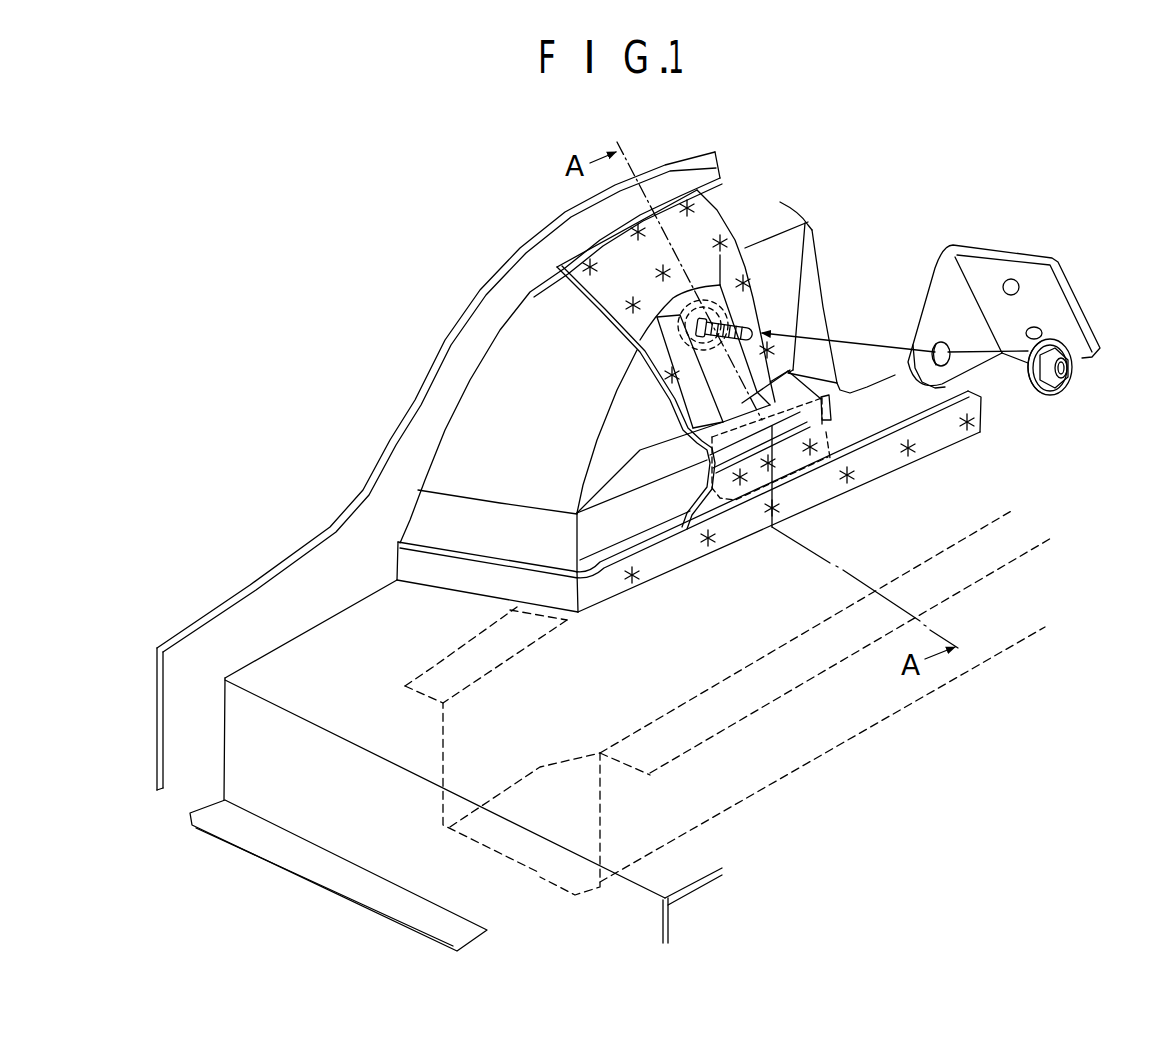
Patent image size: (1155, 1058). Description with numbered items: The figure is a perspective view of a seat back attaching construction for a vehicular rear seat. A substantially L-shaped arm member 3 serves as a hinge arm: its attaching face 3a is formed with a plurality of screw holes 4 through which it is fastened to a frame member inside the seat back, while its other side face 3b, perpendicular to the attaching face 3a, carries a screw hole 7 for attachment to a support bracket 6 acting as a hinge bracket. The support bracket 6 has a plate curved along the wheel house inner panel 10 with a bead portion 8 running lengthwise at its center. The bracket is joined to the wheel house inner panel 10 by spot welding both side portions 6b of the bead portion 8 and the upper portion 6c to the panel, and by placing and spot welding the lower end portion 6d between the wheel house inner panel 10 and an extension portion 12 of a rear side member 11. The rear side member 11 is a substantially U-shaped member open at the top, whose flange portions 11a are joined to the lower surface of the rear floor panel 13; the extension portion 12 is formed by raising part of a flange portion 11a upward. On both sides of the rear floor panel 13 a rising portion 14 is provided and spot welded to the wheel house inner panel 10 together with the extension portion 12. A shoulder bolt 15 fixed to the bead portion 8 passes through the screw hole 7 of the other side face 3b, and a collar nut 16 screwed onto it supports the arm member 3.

The arm member 3 is at (988, 243).
The attaching face 3a is at (1066, 286).
The other side face 3b is at (918, 332).
The screw hole 4 is at (1042, 336).
The support bracket 6 is at (728, 223).
The side portion 6b is at (725, 291).
The upper portion 6c is at (703, 213).
The lower end portion 6d is at (700, 458).
The screw hole 7 is at (948, 362).
The bead portion 8 is at (760, 315).
The wheel house inner panel 10 is at (533, 323).
The rear side member 11 is at (703, 793).
The flange portion 11a is at (430, 667).
The extension portion 12 is at (868, 432).
The rear floor panel 13 is at (290, 668).
The rising portion 14 is at (575, 556).
The shoulder bolt 15 is at (745, 322).
The collar nut 16 is at (1073, 376).